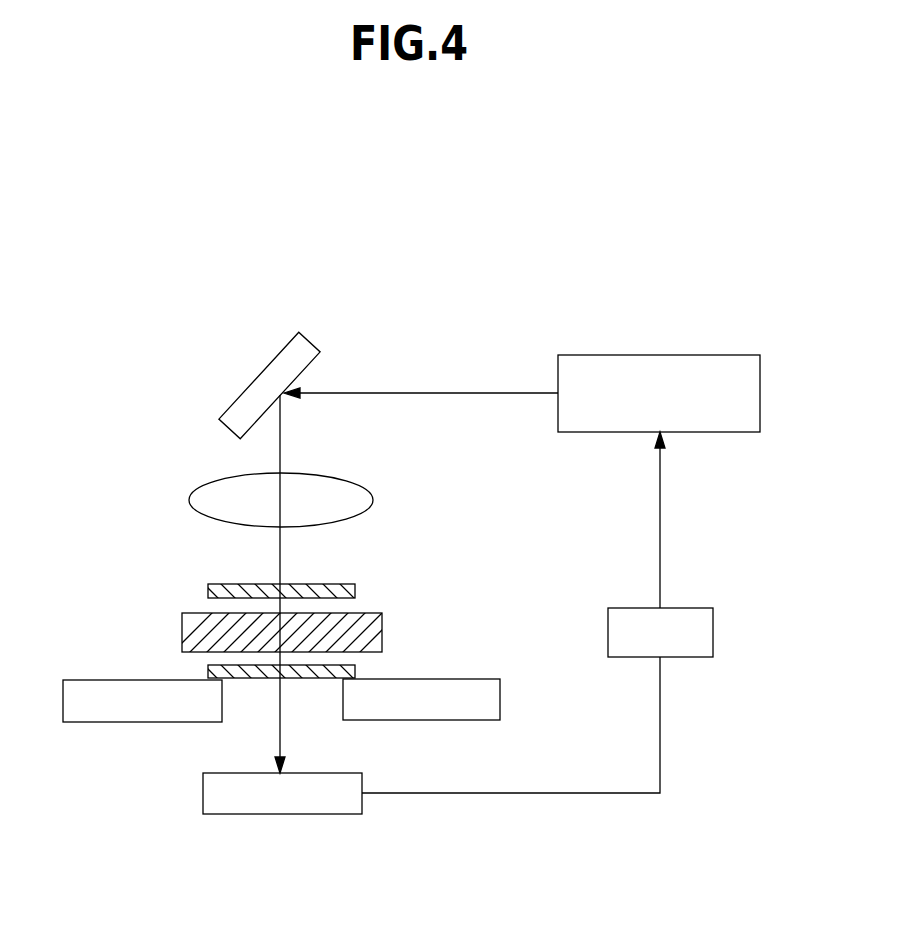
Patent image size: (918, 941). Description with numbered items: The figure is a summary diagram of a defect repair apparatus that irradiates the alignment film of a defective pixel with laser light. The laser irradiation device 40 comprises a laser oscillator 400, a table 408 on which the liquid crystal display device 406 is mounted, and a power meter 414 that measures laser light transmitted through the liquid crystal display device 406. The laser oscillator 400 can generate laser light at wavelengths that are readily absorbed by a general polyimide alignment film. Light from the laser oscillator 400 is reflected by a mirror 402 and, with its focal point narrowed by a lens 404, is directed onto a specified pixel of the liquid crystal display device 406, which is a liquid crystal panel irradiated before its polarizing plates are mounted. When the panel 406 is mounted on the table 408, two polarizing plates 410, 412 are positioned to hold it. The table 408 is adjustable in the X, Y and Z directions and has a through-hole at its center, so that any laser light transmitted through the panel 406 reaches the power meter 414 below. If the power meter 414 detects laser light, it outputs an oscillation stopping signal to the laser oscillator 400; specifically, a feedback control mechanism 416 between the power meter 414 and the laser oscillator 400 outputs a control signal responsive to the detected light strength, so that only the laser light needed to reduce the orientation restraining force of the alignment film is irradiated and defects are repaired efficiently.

The laser irradiation device 40 is at (503, 229).
The laser oscillator 400 is at (683, 367).
The mirror 402 is at (297, 357).
The lens 404 is at (360, 500).
The liquid crystal display device 406 is at (372, 623).
The table 408 is at (470, 697).
The polarizing plate 410 is at (213, 593).
The polarizing plate 412 is at (213, 675).
The power meter 414 is at (255, 798).
The feedback control mechanism 416 is at (692, 607).